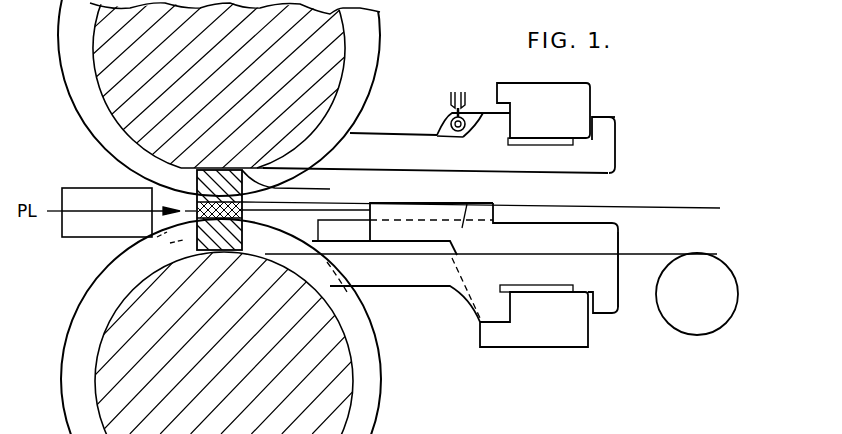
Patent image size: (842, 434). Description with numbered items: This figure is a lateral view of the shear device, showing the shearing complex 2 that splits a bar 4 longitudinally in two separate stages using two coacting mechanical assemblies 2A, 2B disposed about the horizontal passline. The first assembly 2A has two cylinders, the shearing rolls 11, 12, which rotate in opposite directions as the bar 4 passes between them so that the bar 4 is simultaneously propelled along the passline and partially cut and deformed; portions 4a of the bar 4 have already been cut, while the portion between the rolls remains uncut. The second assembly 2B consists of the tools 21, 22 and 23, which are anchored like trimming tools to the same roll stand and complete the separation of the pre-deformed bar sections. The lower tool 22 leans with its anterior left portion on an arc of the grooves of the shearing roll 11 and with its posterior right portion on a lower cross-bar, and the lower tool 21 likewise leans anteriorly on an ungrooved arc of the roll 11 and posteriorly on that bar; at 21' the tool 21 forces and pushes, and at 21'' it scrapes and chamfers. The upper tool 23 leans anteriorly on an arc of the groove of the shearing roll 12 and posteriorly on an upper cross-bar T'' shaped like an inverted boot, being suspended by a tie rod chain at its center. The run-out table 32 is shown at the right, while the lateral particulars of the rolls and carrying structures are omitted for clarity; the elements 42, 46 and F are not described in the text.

The shearing complex 2 is at (480, 50).
The first mechanical assembly 2A is at (376, 96).
The second mechanical assembly 2B is at (628, 115).
The bar 4 is at (95, 232).
The cut portions of bar 4a is at (105, 276).
The shearing roll 11 is at (360, 383).
The shearing roll 12 is at (358, 38).
The lower tool 21 is at (493, 244).
The forcing and pushing portion of tool 21' is at (402, 271).
The scraping and chamfering portion of tool 21'' is at (447, 286).
The lower tool 22 is at (612, 272).
The upper tool 23 is at (608, 168).
The run-out table 32 is at (688, 318).
The pressing element 42 is at (196, 177).
The web 46 is at (244, 210).
The pivot pin F is at (463, 93).
The upper cross-bar T'' is at (558, 223).